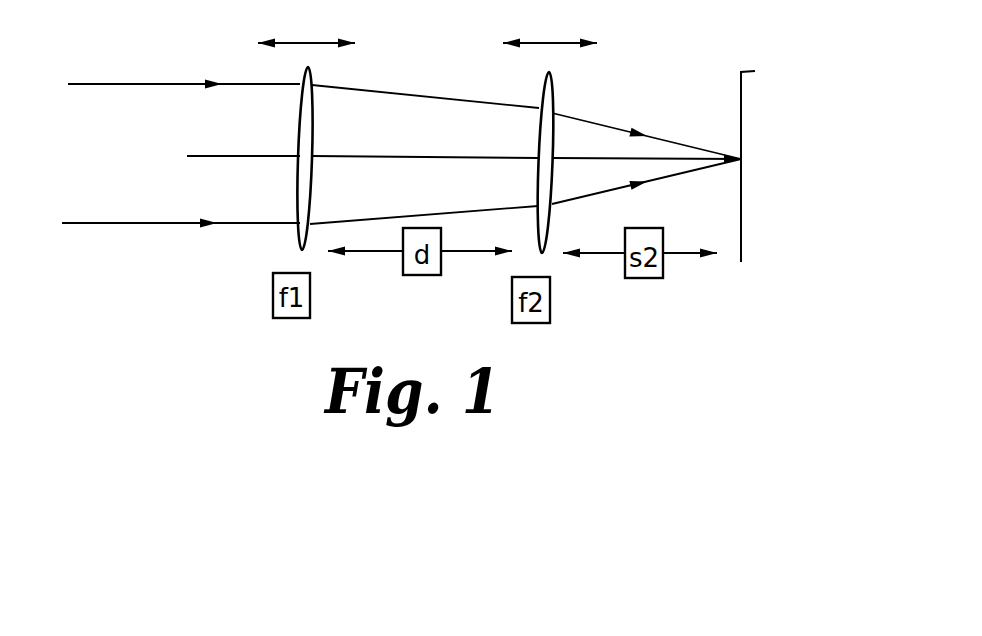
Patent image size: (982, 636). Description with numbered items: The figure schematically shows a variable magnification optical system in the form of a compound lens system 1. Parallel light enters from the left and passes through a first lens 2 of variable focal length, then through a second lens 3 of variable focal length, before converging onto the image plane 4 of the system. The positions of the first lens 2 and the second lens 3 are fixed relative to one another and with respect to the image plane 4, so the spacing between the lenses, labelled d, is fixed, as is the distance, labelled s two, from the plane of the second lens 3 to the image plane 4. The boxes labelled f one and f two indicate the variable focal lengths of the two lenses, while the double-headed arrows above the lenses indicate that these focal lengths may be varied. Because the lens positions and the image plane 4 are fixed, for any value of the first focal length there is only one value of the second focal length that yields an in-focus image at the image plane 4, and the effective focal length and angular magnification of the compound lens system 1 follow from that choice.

The compound lens system 1 is at (242, 250).
The first lens 2 is at (303, 78).
The second lens 3 is at (553, 85).
The image plane 4 is at (755, 71).